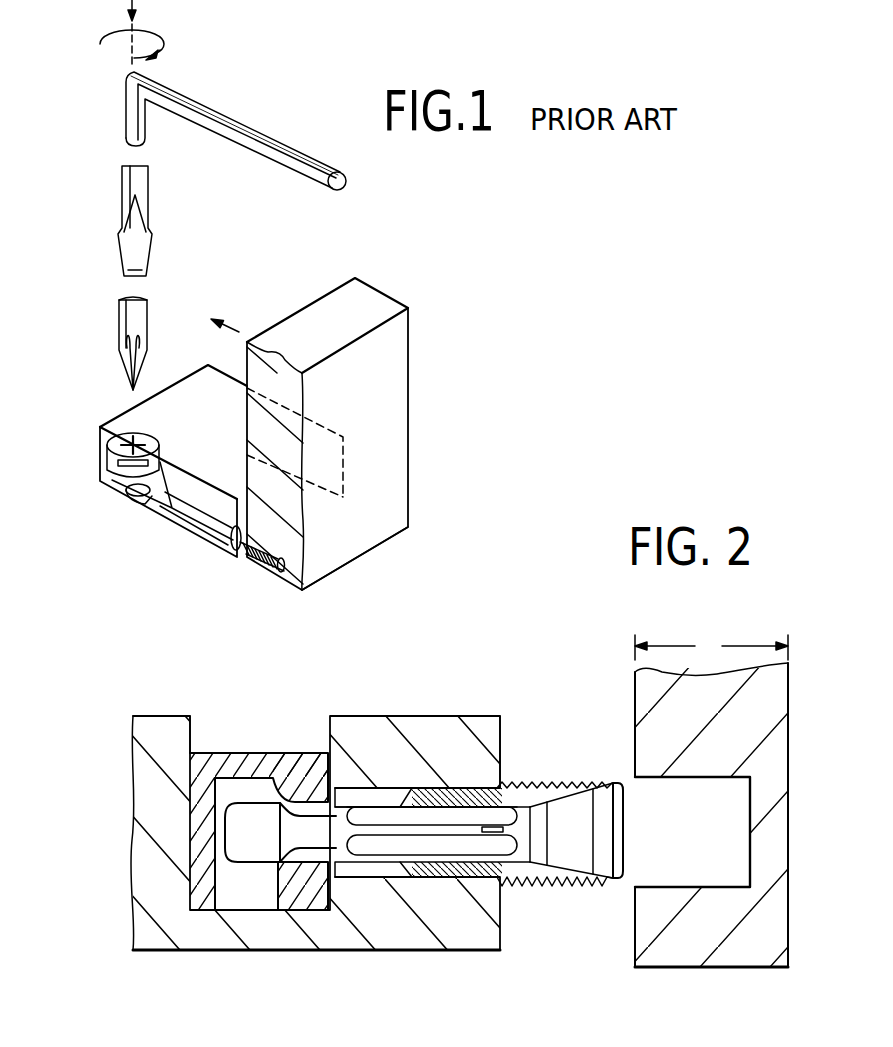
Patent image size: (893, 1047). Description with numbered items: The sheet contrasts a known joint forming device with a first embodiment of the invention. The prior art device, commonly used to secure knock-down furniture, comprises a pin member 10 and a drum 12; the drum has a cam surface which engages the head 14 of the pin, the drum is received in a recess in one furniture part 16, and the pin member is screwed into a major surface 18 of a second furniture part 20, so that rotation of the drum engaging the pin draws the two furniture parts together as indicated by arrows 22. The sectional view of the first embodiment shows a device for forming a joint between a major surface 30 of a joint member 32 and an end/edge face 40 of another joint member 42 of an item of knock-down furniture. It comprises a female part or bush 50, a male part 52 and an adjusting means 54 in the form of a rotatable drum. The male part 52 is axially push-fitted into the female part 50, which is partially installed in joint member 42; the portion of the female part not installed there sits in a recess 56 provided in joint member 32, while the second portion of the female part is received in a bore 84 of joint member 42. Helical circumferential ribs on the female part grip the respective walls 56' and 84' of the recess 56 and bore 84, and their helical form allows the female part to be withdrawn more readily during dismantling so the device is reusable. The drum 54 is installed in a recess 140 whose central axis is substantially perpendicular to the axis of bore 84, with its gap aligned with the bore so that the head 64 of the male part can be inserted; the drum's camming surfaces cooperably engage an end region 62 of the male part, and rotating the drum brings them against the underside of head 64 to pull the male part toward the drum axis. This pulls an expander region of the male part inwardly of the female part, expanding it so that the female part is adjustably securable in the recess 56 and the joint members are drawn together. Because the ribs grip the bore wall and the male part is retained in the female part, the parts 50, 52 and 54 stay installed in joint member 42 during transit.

In FIG. 1, the pin member 10 is at (180, 514).
In FIG. 1, the drum 12 is at (110, 477).
In FIG. 1, the head 14 is at (130, 490).
In FIG. 1, the furniture part 16 is at (140, 413).
In FIG. 1, the major surface 18 is at (318, 262).
In FIG. 1, the second furniture part 20 is at (386, 559).
In FIG. 1, the arrows 22 is at (347, 275).
In FIG. 2, the major surface 30 is at (635, 683).
In FIG. 2, the joint member 32 is at (733, 982).
In FIG. 2, the end/edge face 40 is at (497, 737).
In FIG. 2, the joint member 42 is at (426, 703).
In FIG. 2, the female part 50 is at (518, 775).
In FIG. 2, the male part 52 is at (603, 798).
In FIG. 2, the adjusting means 54 is at (263, 742).
In FIG. 2, the recess 56 is at (659, 865).
In FIG. 2, the wall 56' is at (692, 956).
In FIG. 2, the end region 62 is at (296, 840).
In FIG. 2, the head 64 is at (248, 853).
In FIG. 2, the bore 84 is at (432, 740).
In FIG. 2, the wall 84' is at (358, 738).
In FIG. 2, the recess 140 is at (208, 732).